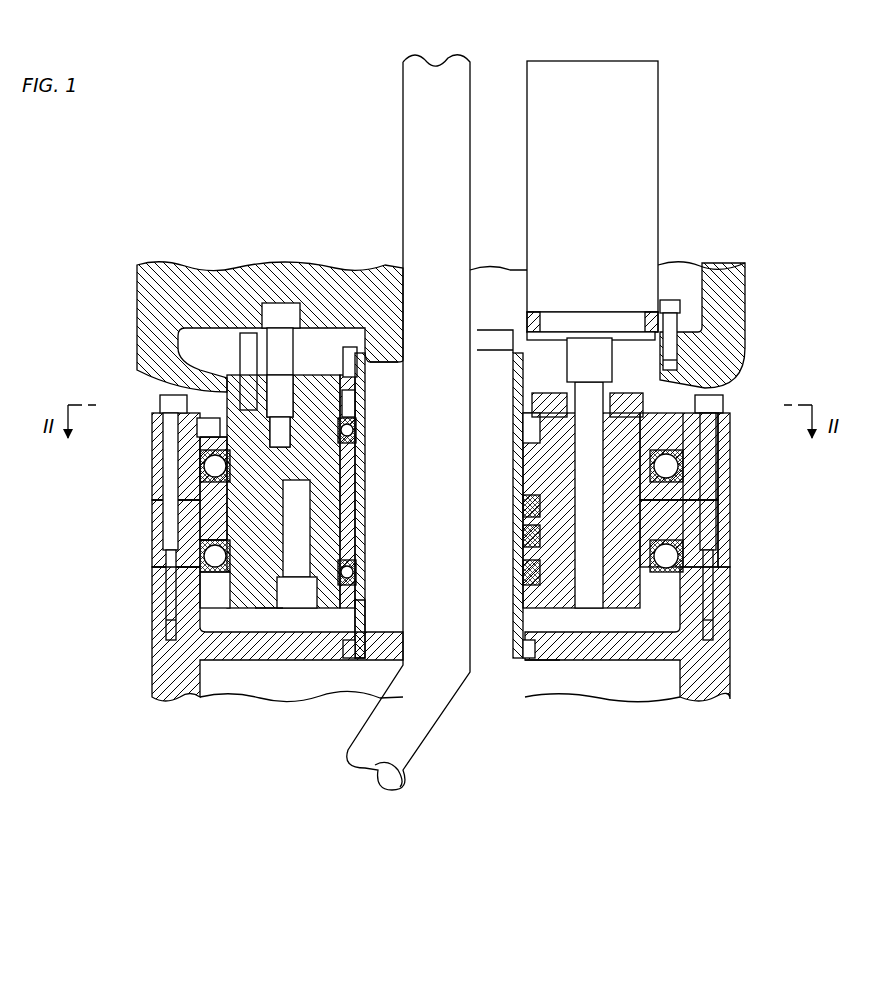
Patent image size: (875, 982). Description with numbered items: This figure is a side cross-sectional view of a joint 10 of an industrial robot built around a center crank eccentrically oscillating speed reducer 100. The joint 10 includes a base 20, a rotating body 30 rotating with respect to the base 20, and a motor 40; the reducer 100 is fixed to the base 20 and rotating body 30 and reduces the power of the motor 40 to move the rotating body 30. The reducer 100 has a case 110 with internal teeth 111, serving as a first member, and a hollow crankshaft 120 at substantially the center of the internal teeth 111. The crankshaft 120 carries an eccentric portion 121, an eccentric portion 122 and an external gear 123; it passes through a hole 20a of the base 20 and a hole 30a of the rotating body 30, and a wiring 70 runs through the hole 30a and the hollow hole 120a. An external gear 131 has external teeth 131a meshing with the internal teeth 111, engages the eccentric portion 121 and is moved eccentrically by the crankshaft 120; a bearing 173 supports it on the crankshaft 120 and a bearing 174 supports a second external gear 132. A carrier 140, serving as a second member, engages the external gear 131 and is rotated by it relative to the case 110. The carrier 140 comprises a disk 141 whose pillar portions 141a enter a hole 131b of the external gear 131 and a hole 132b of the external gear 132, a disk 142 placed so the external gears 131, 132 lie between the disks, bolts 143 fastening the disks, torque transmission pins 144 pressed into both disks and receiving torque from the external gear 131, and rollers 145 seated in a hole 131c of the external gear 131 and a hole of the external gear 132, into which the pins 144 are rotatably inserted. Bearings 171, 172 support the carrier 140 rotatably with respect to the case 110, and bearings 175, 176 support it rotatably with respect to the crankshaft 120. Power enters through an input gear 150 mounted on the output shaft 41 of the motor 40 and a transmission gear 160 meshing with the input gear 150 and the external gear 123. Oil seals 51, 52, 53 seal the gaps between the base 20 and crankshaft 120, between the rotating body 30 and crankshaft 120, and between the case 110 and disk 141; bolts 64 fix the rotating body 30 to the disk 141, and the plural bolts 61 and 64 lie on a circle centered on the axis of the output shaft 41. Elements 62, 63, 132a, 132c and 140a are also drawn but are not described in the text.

The joint 10 is at (340, 178).
The base 20 is at (157, 667).
The hole of the base 20a is at (357, 648).
The rotating body 30 is at (163, 278).
The hole of the rotating body 30a is at (383, 345).
The motor 40 is at (652, 98).
The output shaft 41 is at (607, 343).
The oil seal 51 is at (360, 656).
The oil seal 52 is at (368, 345).
The oil seal 53 is at (208, 427).
The bolts 61 is at (170, 403).
The bolt 62 is at (673, 300).
The pin 63 is at (247, 345).
The bolts 64 is at (281, 320).
The wiring 70 is at (420, 740).
The eccentrically oscillating speed reducer 100 is at (805, 545).
The case 110 is at (728, 466).
The internal teeth 111 is at (665, 525).
The hollow crankshaft 120 is at (543, 662).
The hollow hole 120a is at (518, 655).
The eccentric portion 121 is at (360, 490).
The eccentric portion 122 is at (540, 545).
The external gear 123 is at (362, 380).
The external gear 131 is at (183, 470).
The external teeth 131a is at (697, 505).
The hole of the external gear 131b is at (183, 490).
The hole of the external gear 131c is at (660, 468).
The external gear 132 is at (170, 523).
The lower bearing right 132a is at (697, 553).
The hole of the external gear 132b is at (190, 542).
The lower bearing seal 132c is at (528, 506).
The carrier 140 is at (160, 356).
The right housing wall 140a is at (727, 378).
The disk 141 is at (318, 388).
The pillar portions 141a is at (268, 612).
The disk 142 is at (232, 612).
The bolts 143 is at (302, 620).
The torque transmission pins 144 is at (540, 565).
The rollers 145 is at (528, 478).
The input gear 150 is at (610, 367).
The transmission gear 160 is at (555, 395).
The bearing 171 is at (205, 478).
The bearing 172 is at (170, 587).
The bearing 173 is at (349, 430).
The bearing 174 is at (528, 535).
The bearing 175 is at (350, 403).
The bearing 176 is at (350, 590).